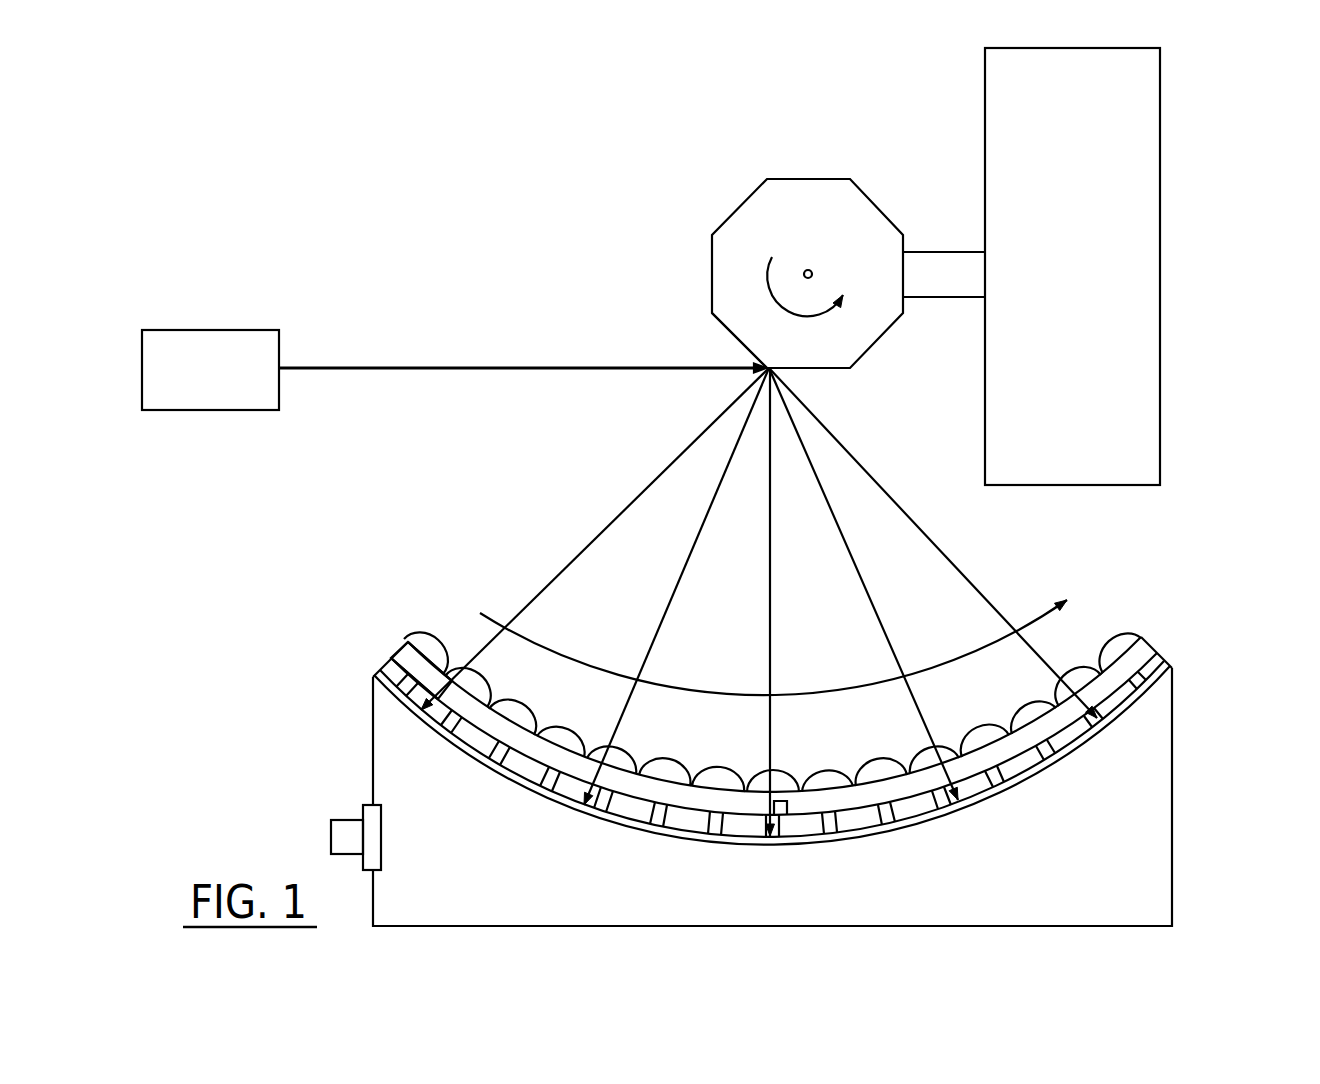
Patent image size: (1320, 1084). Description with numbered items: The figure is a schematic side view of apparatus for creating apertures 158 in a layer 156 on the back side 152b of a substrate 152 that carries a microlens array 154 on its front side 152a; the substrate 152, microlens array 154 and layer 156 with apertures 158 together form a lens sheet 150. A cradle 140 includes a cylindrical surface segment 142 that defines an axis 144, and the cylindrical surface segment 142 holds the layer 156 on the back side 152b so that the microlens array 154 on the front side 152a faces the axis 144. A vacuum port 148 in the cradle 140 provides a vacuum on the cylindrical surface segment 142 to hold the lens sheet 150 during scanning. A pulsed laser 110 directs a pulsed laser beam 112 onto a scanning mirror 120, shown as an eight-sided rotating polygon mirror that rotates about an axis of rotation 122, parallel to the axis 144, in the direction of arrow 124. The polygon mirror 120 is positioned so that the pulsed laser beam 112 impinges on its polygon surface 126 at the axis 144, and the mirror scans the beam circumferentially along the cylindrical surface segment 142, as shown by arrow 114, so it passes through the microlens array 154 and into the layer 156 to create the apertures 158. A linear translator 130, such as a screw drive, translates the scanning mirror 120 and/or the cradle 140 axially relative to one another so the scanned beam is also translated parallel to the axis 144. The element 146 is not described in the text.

The pulsed laser 110 is at (211, 330).
The pulsed laser beam 112 is at (398, 368).
The arrow 114 is at (958, 660).
The scanning mirror 120 is at (742, 203).
The axis of rotation 122 is at (812, 269).
The arrow 124 is at (800, 313).
The polygon surface 126 is at (738, 339).
The linear translator 130 is at (1162, 260).
The cradle 140 is at (1173, 822).
The cylindrical surface segment 142 is at (926, 838).
The axis 144 is at (778, 364).
The lens 146 is at (567, 742).
The vacuum port 148 is at (331, 834).
The lens sheet 150 is at (1140, 619).
The substrate 152 is at (397, 656).
The front side 152a is at (410, 655).
The back side 152b is at (396, 655).
The microlens array 154 is at (441, 656).
The layer 156 is at (373, 677).
The apertures 158 is at (437, 740).